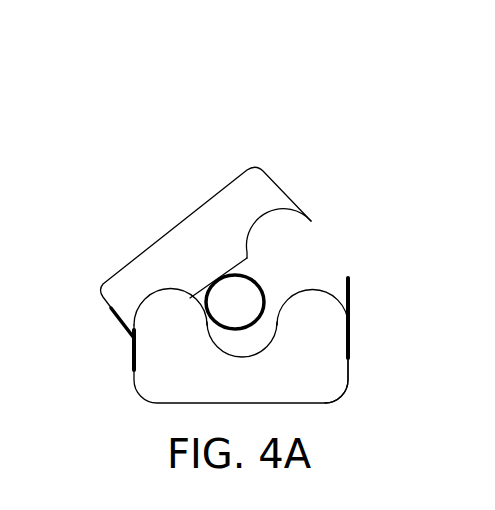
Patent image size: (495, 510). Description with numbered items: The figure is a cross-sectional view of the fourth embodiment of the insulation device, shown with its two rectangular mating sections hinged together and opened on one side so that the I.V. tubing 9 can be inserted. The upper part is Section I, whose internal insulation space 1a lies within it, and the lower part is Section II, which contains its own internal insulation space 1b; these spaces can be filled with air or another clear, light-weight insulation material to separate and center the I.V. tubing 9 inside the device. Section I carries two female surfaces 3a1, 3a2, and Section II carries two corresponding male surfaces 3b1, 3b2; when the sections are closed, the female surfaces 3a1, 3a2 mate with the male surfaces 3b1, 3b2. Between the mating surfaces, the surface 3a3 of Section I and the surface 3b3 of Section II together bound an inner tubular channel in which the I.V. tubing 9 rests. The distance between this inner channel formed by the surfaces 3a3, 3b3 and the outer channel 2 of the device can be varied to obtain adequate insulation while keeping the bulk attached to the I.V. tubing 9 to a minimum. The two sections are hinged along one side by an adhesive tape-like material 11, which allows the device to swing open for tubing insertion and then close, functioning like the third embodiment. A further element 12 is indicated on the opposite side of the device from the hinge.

The internal insulation space 1a is at (196, 240).
The internal insulation space 1b is at (207, 388).
The outer channel 2 is at (352, 385).
The female surface 3a1 is at (140, 288).
The female surface 3a2 is at (265, 212).
The surface of Section I 3a3 is at (227, 258).
The male surface 3b1 is at (168, 296).
The male surface 3b2 is at (313, 296).
The surface of Section II 3b3 is at (232, 356).
The I.V. tubing 9 is at (259, 279).
The adhesive tape-like material 11 is at (126, 360).
The right flange 12 is at (352, 309).